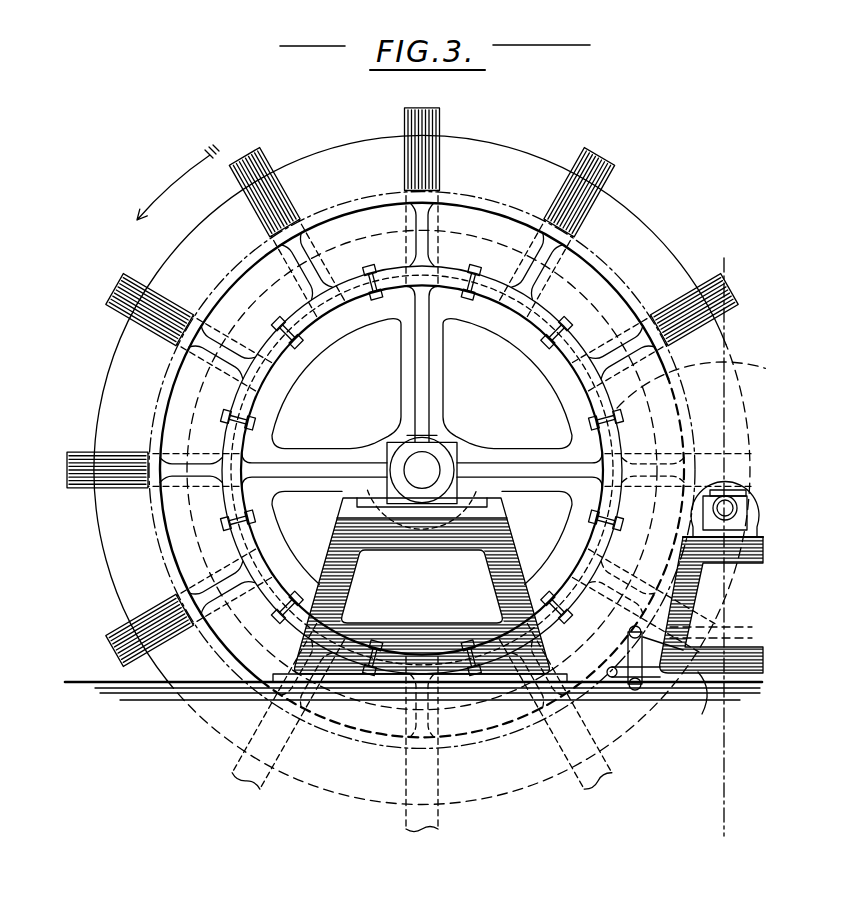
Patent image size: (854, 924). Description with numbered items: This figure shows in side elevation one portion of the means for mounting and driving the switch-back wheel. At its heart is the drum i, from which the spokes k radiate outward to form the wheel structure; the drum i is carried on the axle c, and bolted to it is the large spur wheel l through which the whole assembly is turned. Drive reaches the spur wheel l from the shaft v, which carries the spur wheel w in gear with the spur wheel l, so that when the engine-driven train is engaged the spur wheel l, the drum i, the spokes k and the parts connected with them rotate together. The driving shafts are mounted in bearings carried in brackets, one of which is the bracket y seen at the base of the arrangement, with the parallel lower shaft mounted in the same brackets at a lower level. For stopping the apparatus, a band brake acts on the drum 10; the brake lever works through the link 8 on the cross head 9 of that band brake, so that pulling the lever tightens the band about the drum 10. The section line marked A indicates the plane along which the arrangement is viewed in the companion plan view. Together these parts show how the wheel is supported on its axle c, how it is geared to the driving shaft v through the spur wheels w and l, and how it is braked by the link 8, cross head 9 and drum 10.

The spur wheel l is at (422, 470).
The drum i is at (422, 470).
The spokes k is at (422, 442).
The axle c is at (411, 470).
The drum 10 is at (650, 410).
The shaft v is at (733, 500).
The spur wheel w is at (758, 501).
The link 8 is at (730, 627).
The cross head 9 is at (638, 690).
The bracket y is at (704, 696).
The section line A is at (703, 851).